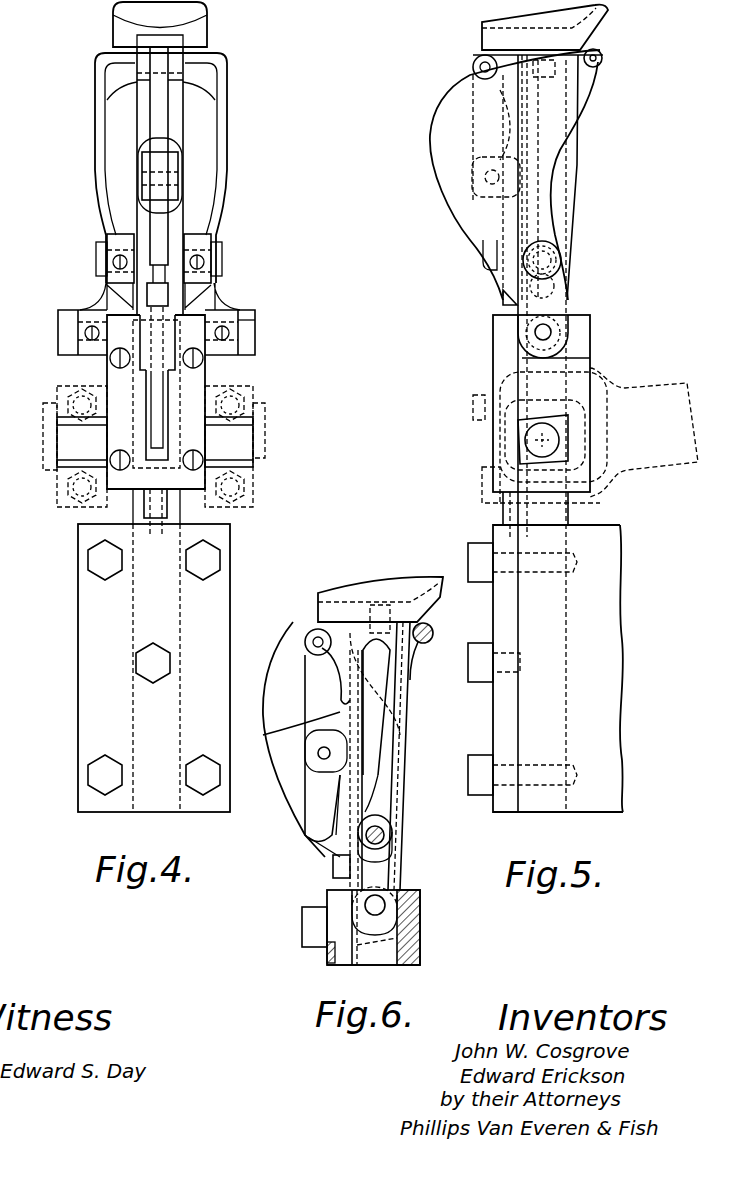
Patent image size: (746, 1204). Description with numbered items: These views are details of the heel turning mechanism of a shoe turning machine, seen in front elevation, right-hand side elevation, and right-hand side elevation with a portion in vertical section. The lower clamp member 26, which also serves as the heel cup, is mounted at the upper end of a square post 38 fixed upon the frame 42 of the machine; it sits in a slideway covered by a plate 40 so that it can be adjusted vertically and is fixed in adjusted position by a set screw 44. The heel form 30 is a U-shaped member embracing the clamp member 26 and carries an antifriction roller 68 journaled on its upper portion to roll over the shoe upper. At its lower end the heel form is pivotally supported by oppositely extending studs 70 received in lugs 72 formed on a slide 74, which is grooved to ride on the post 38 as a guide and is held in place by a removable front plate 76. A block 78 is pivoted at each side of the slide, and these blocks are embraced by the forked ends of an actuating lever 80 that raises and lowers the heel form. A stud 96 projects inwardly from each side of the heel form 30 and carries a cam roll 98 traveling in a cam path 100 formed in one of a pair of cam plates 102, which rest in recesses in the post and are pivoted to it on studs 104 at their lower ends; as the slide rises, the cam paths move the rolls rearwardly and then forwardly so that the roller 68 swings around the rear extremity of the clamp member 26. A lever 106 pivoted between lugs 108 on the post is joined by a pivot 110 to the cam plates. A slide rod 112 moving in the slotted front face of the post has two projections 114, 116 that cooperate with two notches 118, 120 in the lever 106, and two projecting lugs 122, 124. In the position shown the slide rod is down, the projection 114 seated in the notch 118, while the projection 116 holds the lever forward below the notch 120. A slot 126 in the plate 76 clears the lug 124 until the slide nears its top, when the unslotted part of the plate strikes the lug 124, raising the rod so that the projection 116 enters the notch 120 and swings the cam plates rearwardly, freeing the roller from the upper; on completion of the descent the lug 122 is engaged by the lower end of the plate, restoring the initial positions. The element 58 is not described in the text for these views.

In FIG. 4, the lower clamp member 26 is at (193, 28).
In FIG. 5, the lower clamp member 26 is at (598, 22).
In FIG. 6, the lower clamp member 26 is at (400, 580).
In FIG. 4, the heel form 30 is at (228, 140).
In FIG. 5, the heel form 30 is at (447, 155).
In FIG. 6, the heel form 30 is at (290, 755).
In FIG. 5, the square post 38 is at (568, 508).
In FIG. 6, the square post 38 is at (385, 955).
In FIG. 4, the plate 40 is at (227, 600).
In FIG. 5, the plate 40 is at (507, 615).
In FIG. 5, the frame 42 is at (617, 672).
In FIG. 4, the set screw 44 is at (145, 667).
In FIG. 5, the set screw 44 is at (468, 674).
In FIG. 4, the stem guide 58 is at (175, 515).
In FIG. 5, the antifriction roller 68 is at (585, 62).
In FIG. 6, the antifriction roller 68 is at (430, 630).
In FIG. 4, the studs 70 is at (245, 340).
In FIG. 5, the studs 70 is at (547, 330).
In FIG. 4, the lugs 72 is at (250, 312).
In FIG. 5, the lugs 72 is at (545, 295).
In FIG. 5, the slide 74 is at (590, 365).
In FIG. 6, the slide 74 is at (420, 907).
In FIG. 4, the removable front plate 76 is at (118, 377).
In FIG. 5, the removable front plate 76 is at (500, 342).
In FIG. 6, the removable front plate 76 is at (337, 896).
In FIG. 4, the block 78 is at (250, 438).
In FIG. 5, the block 78 is at (540, 465).
In FIG. 5, the actuating lever 80 is at (662, 375).
In FIG. 4, the stud 96 is at (222, 254).
In FIG. 5, the stud 96 is at (560, 248).
In FIG. 6, the stud 96 is at (387, 840).
In FIG. 6, the cam roll 98 is at (387, 822).
In FIG. 6, the cam path 100 is at (367, 803).
In FIG. 4, the cam plates 102 is at (135, 218).
In FIG. 5, the cam plates 102 is at (575, 155).
In FIG. 6, the cam plates 102 is at (408, 733).
In FIG. 6, the studs 104 is at (377, 907).
In FIG. 4, the lever 106 is at (157, 127).
In FIG. 5, the lever 106 is at (483, 253).
In FIG. 6, the lever 106 is at (315, 692).
In FIG. 4, the lugs 108 is at (170, 163).
In FIG. 6, the lugs 108 is at (322, 770).
In FIG. 5, the pivot 110 is at (488, 70).
In FIG. 6, the pivot 110 is at (318, 637).
In FIG. 4, the slide rod 112 is at (157, 395).
In FIG. 6, the slide rod 112 is at (397, 938).
In FIG. 6, the projection 114 is at (345, 800).
In FIG. 6, the projection 116 is at (292, 722).
In FIG. 6, the notch 118 is at (350, 808).
In FIG. 6, the notch 120 is at (338, 685).
In FIG. 4, the projecting lug 122 is at (150, 505).
In FIG. 5, the projecting lug 122 is at (505, 512).
In FIG. 4, the projecting lug 124 is at (163, 300).
In FIG. 5, the projecting lug 124 is at (503, 300).
In FIG. 6, the projecting lug 124 is at (335, 867).
In FIG. 4, the slot 126 is at (143, 423).